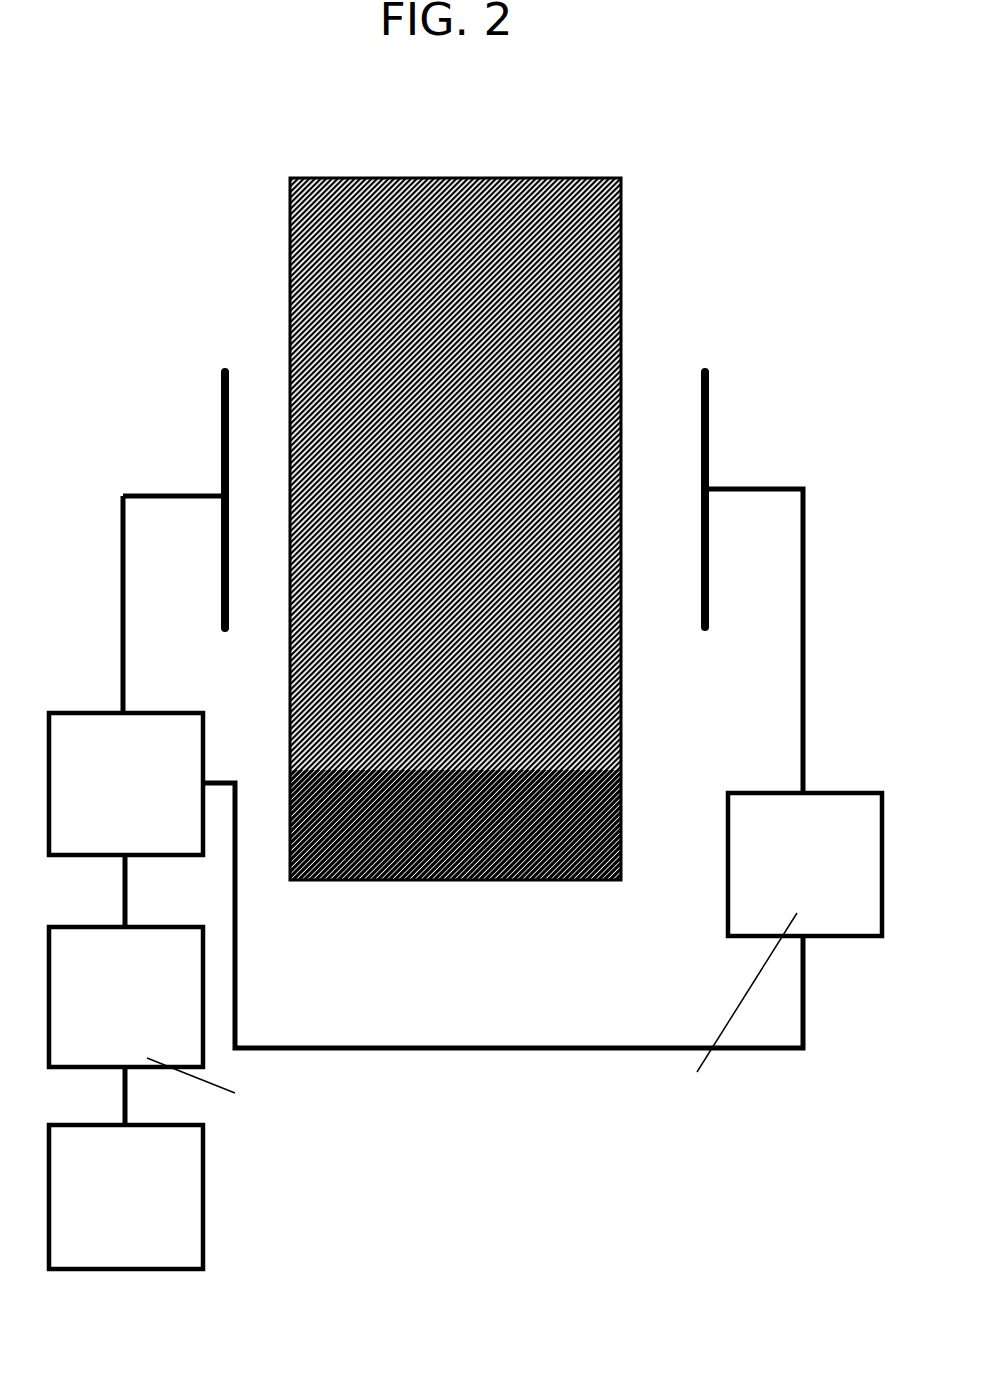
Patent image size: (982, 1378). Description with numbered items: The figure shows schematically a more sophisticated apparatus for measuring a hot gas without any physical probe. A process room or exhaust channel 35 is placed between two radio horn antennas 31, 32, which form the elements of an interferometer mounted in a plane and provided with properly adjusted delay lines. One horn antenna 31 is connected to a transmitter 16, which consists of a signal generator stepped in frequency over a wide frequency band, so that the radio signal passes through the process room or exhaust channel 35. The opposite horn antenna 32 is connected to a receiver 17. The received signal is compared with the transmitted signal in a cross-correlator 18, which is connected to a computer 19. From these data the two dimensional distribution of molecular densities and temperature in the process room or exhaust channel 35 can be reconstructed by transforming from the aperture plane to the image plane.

The transmitter 16 is at (747, 948).
The receiver 17 is at (126, 784).
The cross-correlator 18 is at (264, 1035).
The computer 19 is at (126, 1197).
The radio horn antenna 31 is at (708, 440).
The radio horn antenna 32 is at (222, 443).
The process room or exhaust channel 35 is at (455, 529).